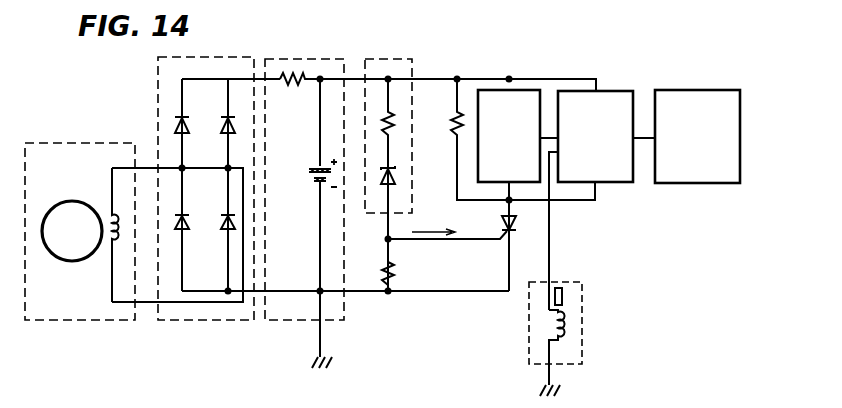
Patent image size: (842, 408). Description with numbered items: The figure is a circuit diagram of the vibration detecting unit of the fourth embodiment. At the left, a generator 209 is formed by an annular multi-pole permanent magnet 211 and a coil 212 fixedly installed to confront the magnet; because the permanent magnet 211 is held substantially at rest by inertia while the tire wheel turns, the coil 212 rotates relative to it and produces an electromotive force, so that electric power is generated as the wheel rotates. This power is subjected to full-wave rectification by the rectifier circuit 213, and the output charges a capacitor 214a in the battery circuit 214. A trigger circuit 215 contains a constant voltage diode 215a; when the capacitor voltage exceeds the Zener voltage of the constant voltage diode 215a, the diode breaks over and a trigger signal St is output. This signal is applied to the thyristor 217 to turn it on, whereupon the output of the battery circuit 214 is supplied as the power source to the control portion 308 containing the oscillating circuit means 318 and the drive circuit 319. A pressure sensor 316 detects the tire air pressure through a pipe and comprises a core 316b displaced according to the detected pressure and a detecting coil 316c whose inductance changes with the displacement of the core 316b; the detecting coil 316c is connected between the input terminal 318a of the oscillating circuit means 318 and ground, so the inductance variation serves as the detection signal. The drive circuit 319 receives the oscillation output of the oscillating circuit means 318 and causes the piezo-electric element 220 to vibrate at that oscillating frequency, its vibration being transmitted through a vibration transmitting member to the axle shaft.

The generator 209 is at (116, 143).
The permanent magnet 211 is at (65, 262).
The coil 212 is at (107, 214).
The rectifier circuit 213 is at (226, 56).
The battery circuit 214 is at (304, 195).
The capacitor 214a is at (313, 182).
The trigger circuit 215 is at (411, 158).
The constant voltage diode 215a is at (397, 172).
The thyristor 217 is at (514, 230).
The control circuit 308 is at (563, 204).
The oscillating circuit means 318 is at (534, 84).
The input terminal 318a is at (549, 154).
The drive circuit 319 is at (617, 91).
The piezo-electric element 220 is at (712, 90).
The pressure sensor 316 is at (583, 339).
The core 316b is at (563, 296).
The detecting coil 316c is at (565, 338).